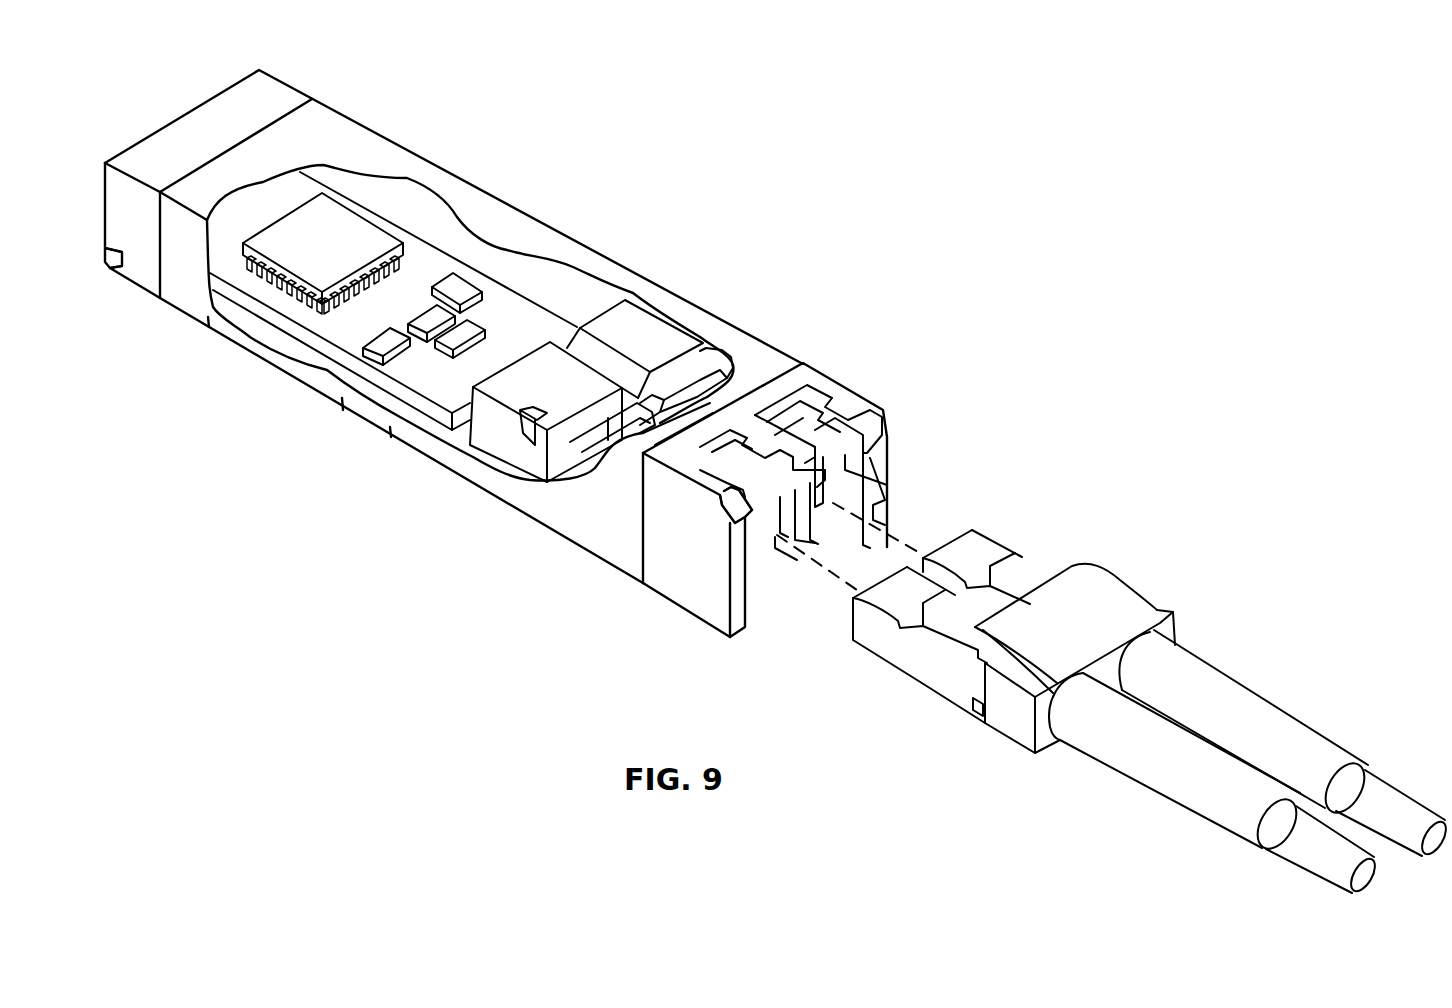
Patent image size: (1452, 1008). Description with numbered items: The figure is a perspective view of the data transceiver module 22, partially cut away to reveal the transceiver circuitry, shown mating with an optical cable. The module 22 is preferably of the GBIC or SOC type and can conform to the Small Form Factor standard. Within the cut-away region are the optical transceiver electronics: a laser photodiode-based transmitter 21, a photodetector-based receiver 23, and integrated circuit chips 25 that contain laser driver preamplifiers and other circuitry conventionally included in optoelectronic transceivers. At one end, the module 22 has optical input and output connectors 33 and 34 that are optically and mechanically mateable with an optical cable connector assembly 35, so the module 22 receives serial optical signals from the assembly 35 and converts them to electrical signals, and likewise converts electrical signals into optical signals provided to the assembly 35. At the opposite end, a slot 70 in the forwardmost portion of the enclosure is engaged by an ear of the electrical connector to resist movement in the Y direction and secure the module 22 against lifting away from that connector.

The transmitter 21 is at (650, 315).
The data transceiver module 22 is at (495, 193).
The receiver 23 is at (493, 448).
The integrated circuit chips 25 is at (337, 253).
The optical input and output connector 33 is at (765, 558).
The optical input and output connector 34 is at (853, 473).
The optical cable connector assembly 35 is at (1007, 728).
The slot 70 is at (112, 272).